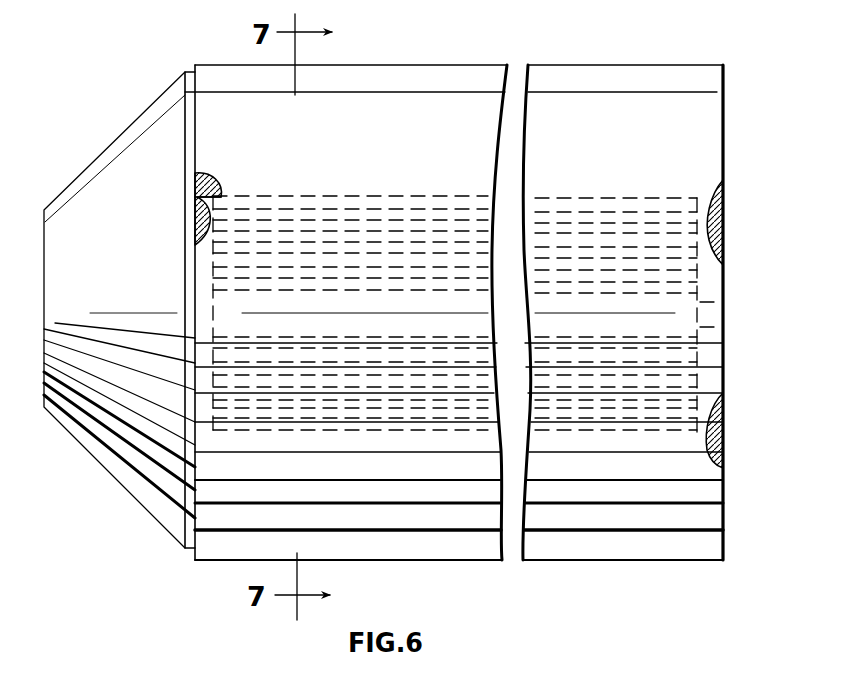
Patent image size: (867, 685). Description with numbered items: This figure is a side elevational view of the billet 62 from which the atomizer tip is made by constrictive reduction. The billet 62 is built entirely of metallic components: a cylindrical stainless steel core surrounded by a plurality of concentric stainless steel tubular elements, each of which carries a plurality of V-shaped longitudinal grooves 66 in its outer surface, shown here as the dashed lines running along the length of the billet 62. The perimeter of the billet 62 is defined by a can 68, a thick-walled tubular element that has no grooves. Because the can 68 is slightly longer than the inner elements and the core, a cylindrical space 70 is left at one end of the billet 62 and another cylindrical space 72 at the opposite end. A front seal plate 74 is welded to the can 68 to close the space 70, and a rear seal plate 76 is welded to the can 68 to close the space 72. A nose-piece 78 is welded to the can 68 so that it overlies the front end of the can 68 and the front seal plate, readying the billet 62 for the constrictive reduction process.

The billet 62 is at (486, 54).
The V-shaped longitudinal grooves 66 is at (357, 203).
The can 68 is at (360, 100).
The cylindrical space 70 is at (204, 429).
The cylindrical space 72 is at (727, 262).
The front seal plate 74 is at (203, 267).
The rear seal plate 76 is at (721, 402).
The nose-piece 78 is at (123, 177).